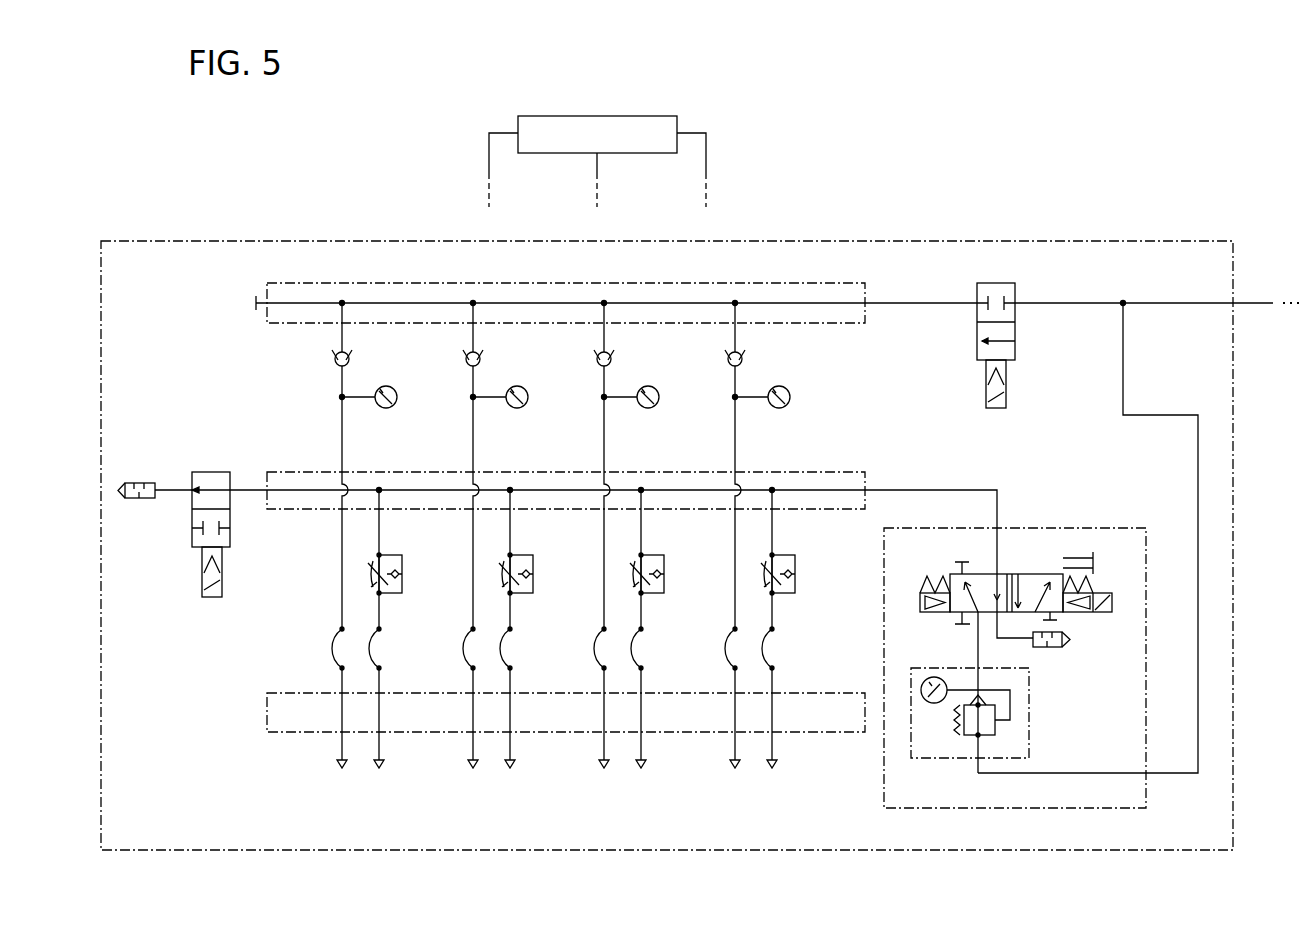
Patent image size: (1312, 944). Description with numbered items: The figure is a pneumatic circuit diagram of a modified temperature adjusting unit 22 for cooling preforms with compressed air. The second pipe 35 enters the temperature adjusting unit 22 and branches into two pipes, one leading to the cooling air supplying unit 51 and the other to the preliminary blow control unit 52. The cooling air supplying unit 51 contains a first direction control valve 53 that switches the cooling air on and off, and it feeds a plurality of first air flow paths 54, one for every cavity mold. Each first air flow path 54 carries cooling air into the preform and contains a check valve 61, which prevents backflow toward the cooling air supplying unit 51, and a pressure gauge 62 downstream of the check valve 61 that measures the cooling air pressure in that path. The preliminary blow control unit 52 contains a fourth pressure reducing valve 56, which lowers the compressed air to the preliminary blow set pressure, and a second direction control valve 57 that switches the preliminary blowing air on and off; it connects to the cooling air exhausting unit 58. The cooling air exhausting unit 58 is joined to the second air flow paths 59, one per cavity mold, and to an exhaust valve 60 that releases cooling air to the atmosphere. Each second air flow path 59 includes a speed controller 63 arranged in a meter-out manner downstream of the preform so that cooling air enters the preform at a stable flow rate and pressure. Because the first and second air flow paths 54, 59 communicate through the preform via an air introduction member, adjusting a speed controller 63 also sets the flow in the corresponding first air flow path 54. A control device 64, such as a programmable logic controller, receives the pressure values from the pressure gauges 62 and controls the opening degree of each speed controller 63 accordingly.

The temperature adjusting unit 22 is at (770, 241).
The second pipe 35 is at (1195, 303).
The cooling air supplying unit 51 is at (635, 283).
The preliminary blow control unit 52 is at (1090, 528).
The first direction control valve 53 is at (1015, 350).
The first air flow path 54 is at (345, 770).
The fourth pressure reducing valve 56 is at (1029, 712).
The second direction control valve 57 is at (1040, 574).
The cooling air exhausting unit 58 is at (775, 472).
The second air flow path 59 is at (385, 770).
The exhaust valve 60 is at (192, 535).
The check valve 61 is at (350, 357).
The pressure gauge 62 is at (395, 405).
The speed controller 63 is at (402, 560).
The control device 64 is at (677, 122).